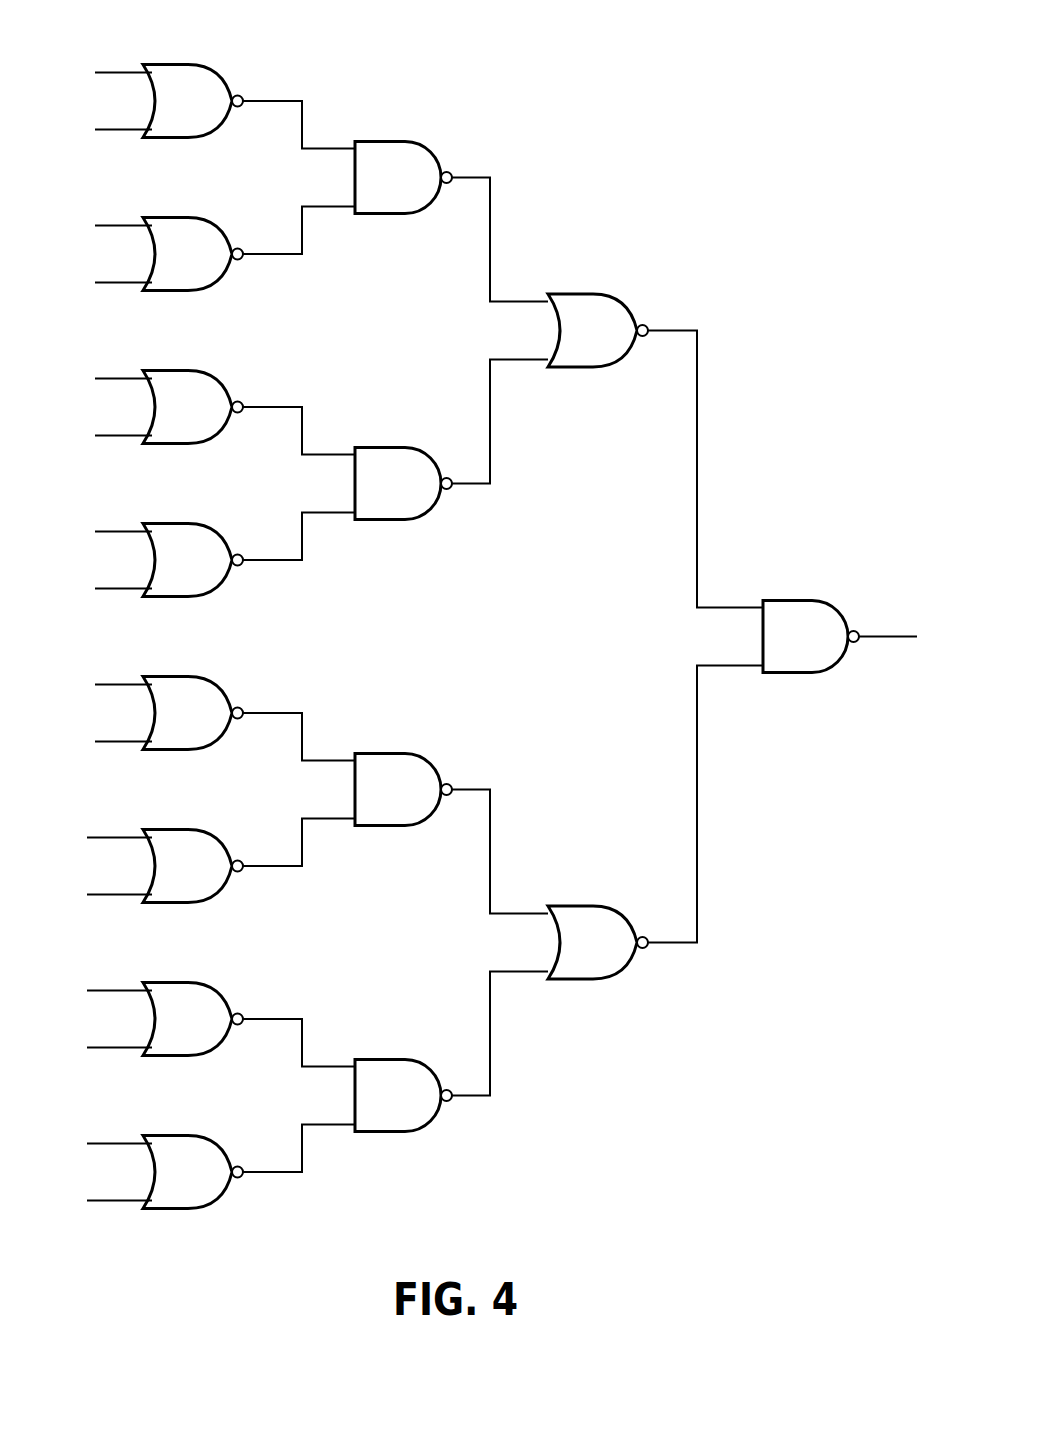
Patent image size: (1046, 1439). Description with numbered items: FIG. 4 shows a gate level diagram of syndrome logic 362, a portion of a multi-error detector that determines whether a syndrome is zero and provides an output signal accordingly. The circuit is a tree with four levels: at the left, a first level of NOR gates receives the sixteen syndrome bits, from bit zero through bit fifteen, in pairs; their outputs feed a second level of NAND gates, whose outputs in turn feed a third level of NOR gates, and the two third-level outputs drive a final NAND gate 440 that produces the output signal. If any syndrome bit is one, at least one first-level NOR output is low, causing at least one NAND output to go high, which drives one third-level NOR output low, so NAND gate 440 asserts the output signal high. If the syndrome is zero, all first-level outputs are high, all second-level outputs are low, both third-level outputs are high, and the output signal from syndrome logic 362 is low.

The syndrome logic 362 is at (622, 99).
The NAND gate 440 is at (786, 599).